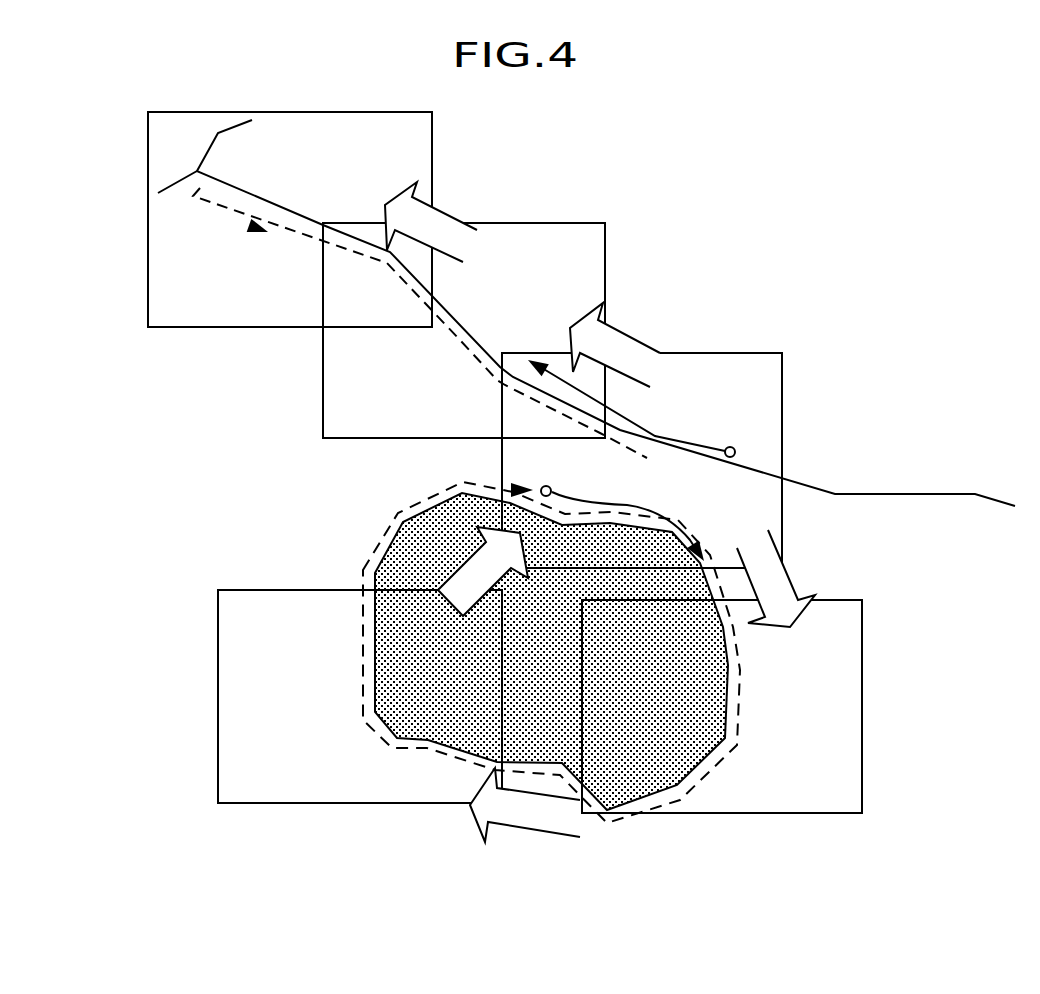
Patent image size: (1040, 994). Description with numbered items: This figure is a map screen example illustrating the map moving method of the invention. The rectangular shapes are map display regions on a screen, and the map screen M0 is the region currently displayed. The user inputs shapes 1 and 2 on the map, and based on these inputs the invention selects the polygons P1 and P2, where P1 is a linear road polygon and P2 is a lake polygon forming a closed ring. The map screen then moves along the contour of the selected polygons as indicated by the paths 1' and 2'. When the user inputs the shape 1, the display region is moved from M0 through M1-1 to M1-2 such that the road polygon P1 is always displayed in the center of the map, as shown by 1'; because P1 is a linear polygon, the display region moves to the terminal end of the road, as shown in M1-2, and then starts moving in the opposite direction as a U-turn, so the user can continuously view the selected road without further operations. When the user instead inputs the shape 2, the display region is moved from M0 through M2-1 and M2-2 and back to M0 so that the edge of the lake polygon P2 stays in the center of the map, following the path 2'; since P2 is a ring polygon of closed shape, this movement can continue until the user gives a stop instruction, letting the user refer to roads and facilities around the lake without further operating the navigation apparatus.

The currently displayed map screen M0 is at (642, 460).
The first moved map screen for input (1) M1-1 is at (464, 330).
The second moved map screen for input (1) M1-2 is at (290, 219).
The first moved map screen for input (2) M2-1 is at (722, 706).
The second moved map screen for input (2) M2-2 is at (360, 696).
The road polygon P1 is at (817, 486).
The lake polygon P2 is at (417, 550).
The user-input shape 1 is at (631, 408).
The map screen movement along road polygon 1' is at (420, 323).
The user-input shape 2 is at (607, 515).
The map screen movement along lake polygon 2' is at (584, 652).